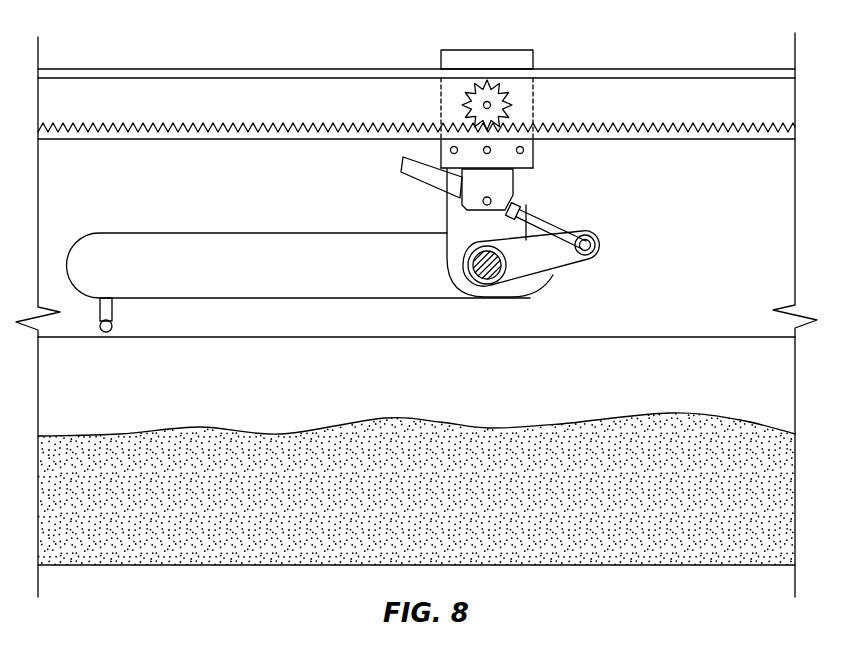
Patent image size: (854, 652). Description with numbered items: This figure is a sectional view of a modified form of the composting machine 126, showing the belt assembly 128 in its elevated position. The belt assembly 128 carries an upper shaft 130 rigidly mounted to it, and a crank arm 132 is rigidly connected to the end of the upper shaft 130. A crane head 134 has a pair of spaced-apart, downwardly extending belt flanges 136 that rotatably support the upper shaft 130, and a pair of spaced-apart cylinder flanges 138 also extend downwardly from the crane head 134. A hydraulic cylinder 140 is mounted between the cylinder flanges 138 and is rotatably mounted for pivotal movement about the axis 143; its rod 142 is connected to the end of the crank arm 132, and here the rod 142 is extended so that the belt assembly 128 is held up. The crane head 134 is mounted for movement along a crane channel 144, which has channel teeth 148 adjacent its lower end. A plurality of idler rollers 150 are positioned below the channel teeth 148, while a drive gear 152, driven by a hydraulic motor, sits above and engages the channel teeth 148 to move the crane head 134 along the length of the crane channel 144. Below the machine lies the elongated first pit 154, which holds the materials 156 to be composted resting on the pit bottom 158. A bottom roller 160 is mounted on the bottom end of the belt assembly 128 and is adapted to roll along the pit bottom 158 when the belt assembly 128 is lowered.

The machine 126 is at (294, 180).
The belt assembly 128 is at (216, 228).
The upper shaft 130 is at (468, 263).
The crank arm 132 is at (545, 275).
The crane head 134 is at (438, 43).
The belt flange 136 is at (465, 230).
The cylinder flange 138 is at (496, 179).
The cylinder 140 is at (405, 164).
The rod 142 is at (595, 250).
The axis 143 is at (460, 200).
The crane channel 144 is at (240, 67).
The channel teeth 148 is at (350, 122).
The idler rollers 150 is at (450, 150).
The drive gear 152 is at (462, 107).
The first pit 154 is at (330, 347).
The materials 156 is at (363, 426).
The pit bottom 158 is at (383, 564).
The bottom roller 160 is at (113, 328).